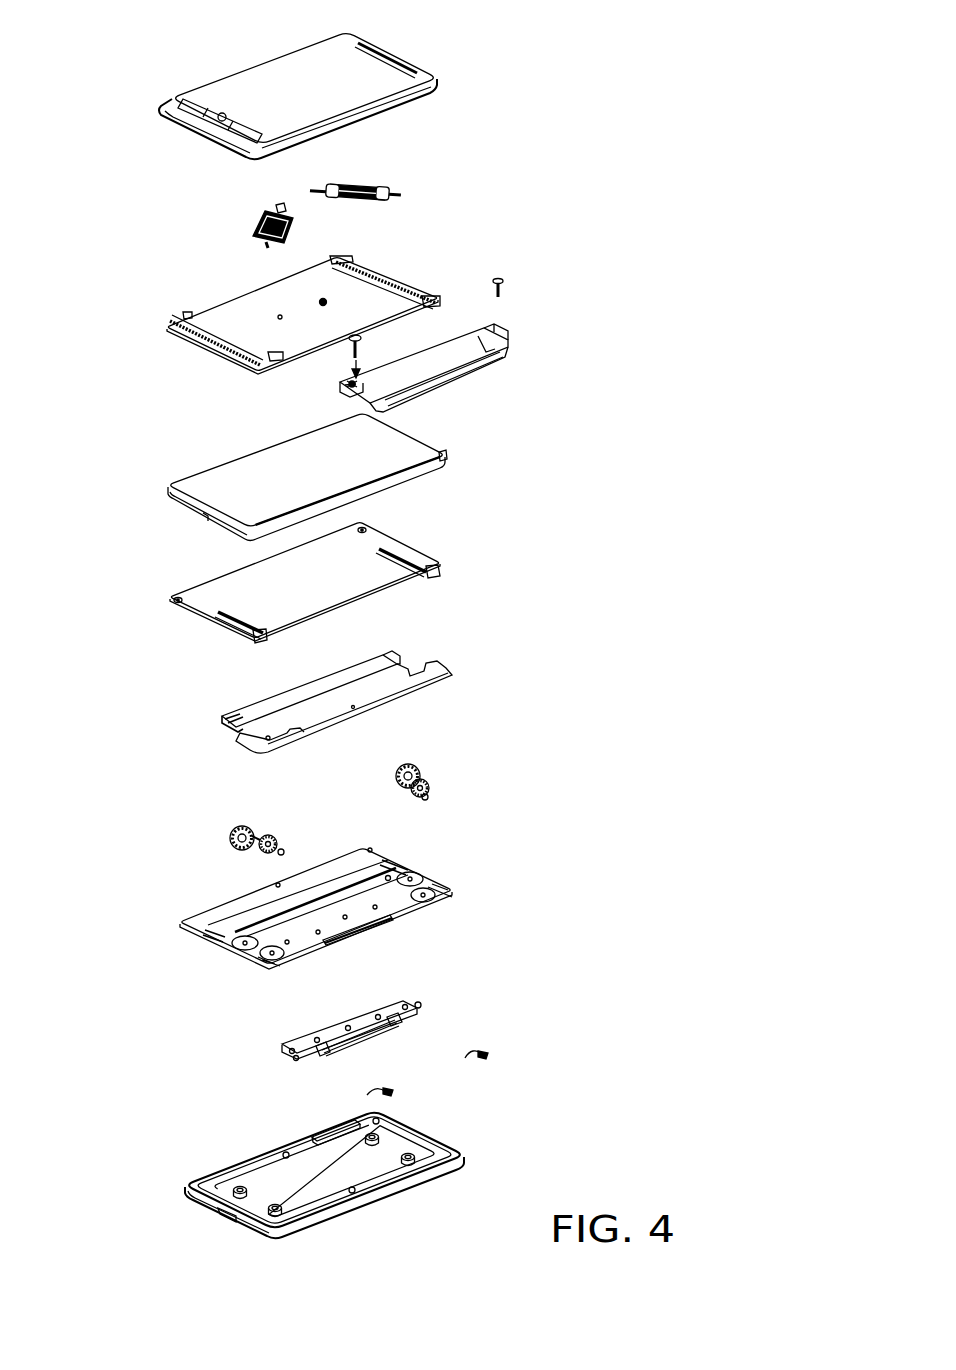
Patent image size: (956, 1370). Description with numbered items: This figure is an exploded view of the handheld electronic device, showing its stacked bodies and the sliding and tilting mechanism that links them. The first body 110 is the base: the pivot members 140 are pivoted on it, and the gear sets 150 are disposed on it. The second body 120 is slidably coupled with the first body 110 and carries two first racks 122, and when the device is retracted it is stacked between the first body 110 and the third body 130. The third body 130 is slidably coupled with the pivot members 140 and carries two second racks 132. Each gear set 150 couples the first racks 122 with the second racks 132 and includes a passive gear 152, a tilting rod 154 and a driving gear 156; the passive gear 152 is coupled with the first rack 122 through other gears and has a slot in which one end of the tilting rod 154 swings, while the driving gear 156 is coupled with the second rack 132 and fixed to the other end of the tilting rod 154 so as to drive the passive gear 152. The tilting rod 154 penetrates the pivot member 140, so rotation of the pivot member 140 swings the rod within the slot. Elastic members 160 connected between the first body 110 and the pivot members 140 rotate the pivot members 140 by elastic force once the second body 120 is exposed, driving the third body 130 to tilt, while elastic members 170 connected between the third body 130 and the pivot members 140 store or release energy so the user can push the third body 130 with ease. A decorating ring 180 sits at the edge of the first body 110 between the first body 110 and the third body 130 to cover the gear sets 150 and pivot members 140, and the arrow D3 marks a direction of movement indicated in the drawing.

The first body 110 is at (243, 708).
The second body 120 is at (227, 593).
The first rack 122 is at (190, 633).
The third body 130 is at (437, 80).
The second rack 132 is at (372, 270).
The pivot member 140 is at (427, 363).
The gear set 150 is at (421, 548).
The passive gear 152 is at (437, 792).
The tilting rod 154 is at (345, 383).
The driving gear 156 is at (363, 347).
The elastic member 160 is at (390, 1093).
The elastic member 170 is at (327, 190).
The decorating ring 180 is at (412, 692).
The sliding direction D3 is at (356, 372).